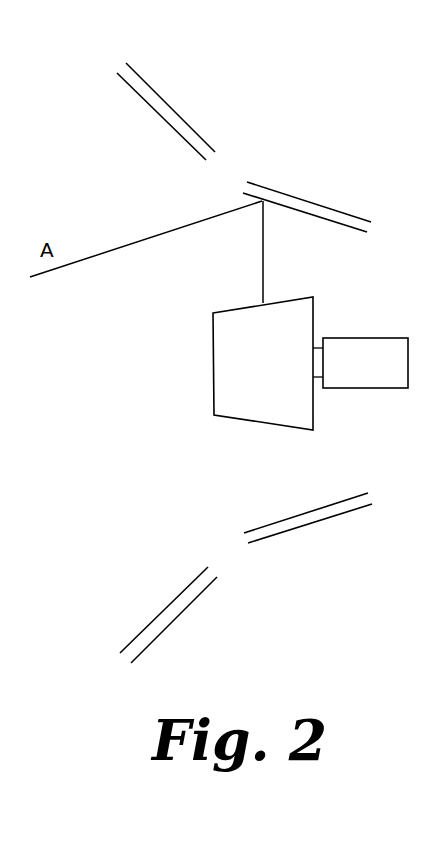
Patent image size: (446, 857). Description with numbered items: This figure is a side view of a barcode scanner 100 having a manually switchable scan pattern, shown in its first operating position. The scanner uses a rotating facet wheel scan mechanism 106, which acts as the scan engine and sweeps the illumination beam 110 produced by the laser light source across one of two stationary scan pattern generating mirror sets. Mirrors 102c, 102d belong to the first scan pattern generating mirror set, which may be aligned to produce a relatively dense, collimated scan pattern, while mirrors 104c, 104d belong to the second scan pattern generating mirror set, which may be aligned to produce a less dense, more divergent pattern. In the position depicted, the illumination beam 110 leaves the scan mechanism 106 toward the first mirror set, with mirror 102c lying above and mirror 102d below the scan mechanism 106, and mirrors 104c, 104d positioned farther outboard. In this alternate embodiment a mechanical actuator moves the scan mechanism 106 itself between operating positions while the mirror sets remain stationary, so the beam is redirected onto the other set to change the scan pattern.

The barcode scanner 100 is at (310, 91).
The first scan pattern generating mirror 102c is at (292, 195).
The first scan pattern generating mirror 102d is at (281, 538).
The second scan pattern generating mirror 104c is at (172, 106).
The second scan pattern generating mirror 104d is at (163, 632).
The rotating facet wheel scan mechanism 106 is at (262, 398).
The illumination beam 110 is at (192, 223).